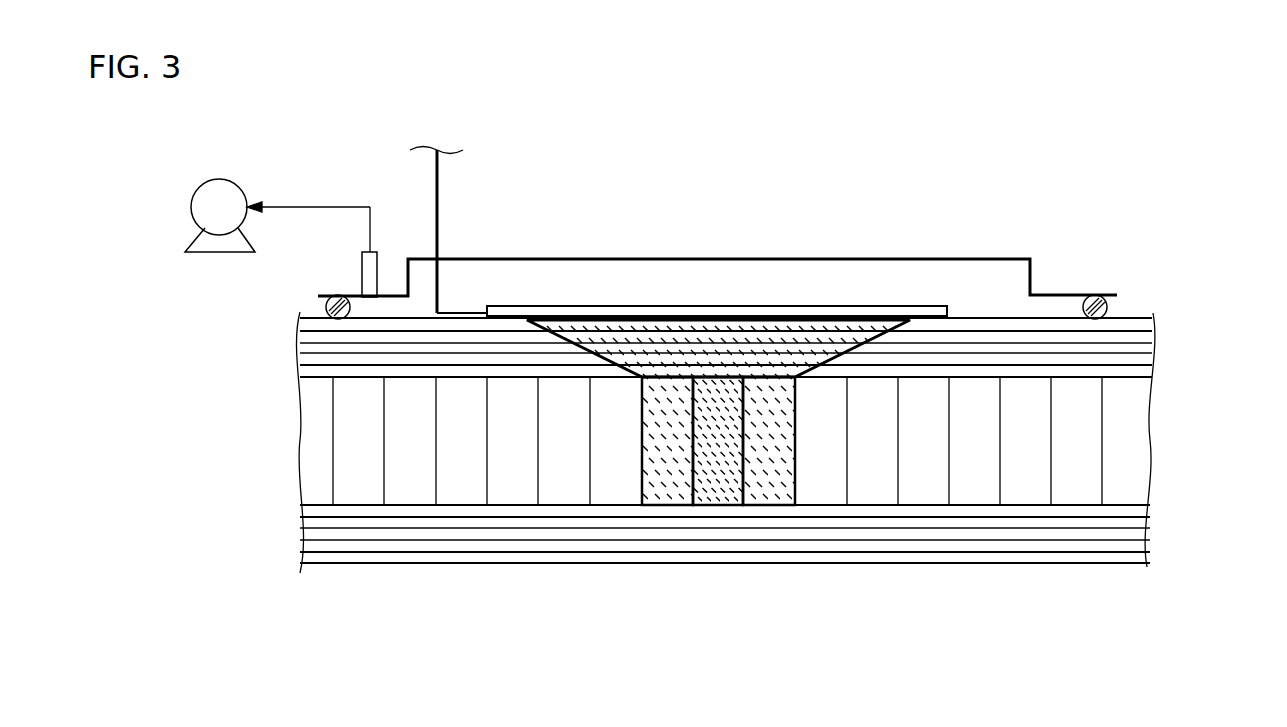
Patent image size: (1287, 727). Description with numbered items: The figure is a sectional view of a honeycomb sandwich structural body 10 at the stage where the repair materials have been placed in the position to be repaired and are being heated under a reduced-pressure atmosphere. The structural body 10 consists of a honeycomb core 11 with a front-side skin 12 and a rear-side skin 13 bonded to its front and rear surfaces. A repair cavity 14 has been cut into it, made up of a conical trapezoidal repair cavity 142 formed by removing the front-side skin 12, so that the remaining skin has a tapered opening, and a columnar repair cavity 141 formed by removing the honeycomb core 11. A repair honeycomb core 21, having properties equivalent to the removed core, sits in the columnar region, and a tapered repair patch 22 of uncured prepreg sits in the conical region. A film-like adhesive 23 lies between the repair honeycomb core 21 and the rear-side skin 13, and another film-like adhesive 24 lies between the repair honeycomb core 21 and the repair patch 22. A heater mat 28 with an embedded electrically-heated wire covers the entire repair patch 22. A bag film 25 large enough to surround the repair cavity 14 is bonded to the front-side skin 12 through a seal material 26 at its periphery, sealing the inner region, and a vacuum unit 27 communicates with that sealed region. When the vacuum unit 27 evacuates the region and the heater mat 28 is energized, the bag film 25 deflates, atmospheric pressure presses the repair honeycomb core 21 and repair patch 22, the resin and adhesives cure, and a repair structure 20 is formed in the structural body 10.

The honeycomb sandwich structural body 10 is at (784, 442).
The honeycomb core 11 is at (1150, 420).
The front-side skin 12 is at (1153, 347).
The rear-side skin 13 is at (763, 518).
The repair cavity 14 is at (599, 293).
The columnar repair cavity 141 is at (643, 433).
The conical trapezoidal repair cavity 142 is at (663, 378).
The repair structure 20 is at (718, 411).
The repair honeycomb core 21 is at (725, 400).
The repair patch 22 is at (783, 337).
The film-like adhesive 23 is at (762, 380).
The film-like adhesive 24 is at (718, 411).
The bag film 25 is at (965, 259).
The seal material 26 is at (325, 300).
The vacuum unit 27 is at (232, 180).
The heater mat 28 is at (507, 306).